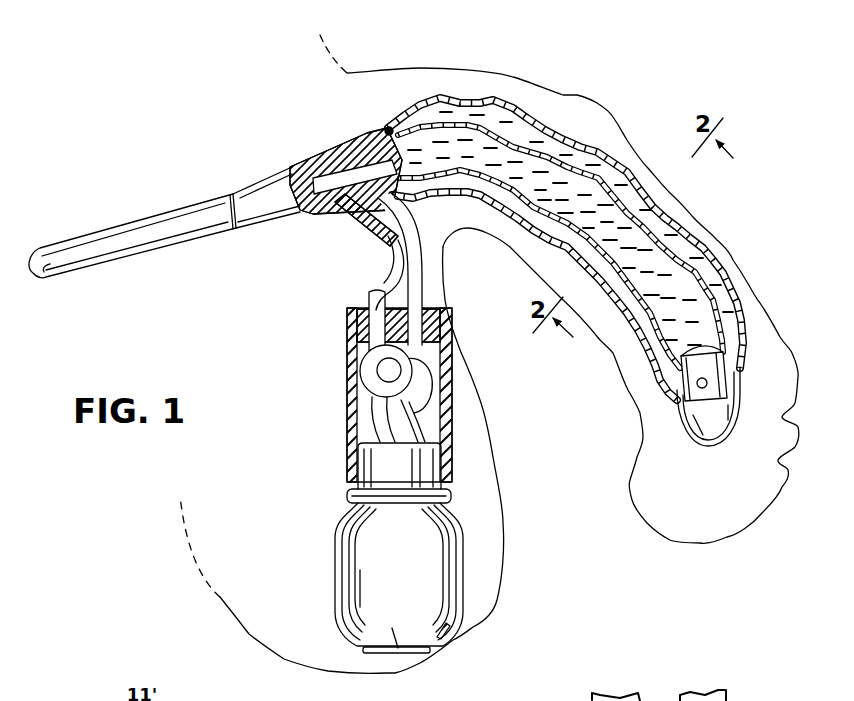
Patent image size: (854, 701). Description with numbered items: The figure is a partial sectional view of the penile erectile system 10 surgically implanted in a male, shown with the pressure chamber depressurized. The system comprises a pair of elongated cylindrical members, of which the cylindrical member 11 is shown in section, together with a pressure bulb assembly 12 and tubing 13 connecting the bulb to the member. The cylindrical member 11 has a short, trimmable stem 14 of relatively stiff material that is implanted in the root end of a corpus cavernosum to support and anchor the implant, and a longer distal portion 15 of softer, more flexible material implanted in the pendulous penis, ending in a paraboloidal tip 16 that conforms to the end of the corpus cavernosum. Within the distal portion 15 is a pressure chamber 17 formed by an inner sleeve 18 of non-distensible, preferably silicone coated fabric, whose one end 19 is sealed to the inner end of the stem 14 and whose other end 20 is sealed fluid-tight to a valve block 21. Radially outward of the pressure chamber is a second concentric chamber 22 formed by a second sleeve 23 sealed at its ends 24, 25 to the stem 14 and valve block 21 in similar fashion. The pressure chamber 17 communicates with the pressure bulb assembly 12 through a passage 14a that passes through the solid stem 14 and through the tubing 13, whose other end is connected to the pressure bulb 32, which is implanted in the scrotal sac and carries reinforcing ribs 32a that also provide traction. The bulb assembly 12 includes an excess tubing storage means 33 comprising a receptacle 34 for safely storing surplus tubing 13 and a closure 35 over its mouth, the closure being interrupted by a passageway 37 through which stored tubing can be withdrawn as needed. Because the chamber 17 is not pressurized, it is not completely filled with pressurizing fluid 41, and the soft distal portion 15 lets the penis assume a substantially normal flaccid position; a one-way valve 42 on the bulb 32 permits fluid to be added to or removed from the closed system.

The penile erectile system 10 is at (548, 122).
The elongated cylindrical member 11 is at (727, 253).
The pressure bulb assembly 12 is at (458, 518).
The tubing 13 is at (427, 272).
The stem 14 is at (180, 205).
The passage 14a is at (343, 143).
The distal portion 15 is at (652, 216).
The tip 16 is at (727, 482).
The pressure chamber 17 is at (705, 305).
The inner sleeve 18 is at (740, 285).
The end of inner sleeve 19 is at (389, 128).
The end of inner sleeve 20 is at (680, 358).
The valve block 21 is at (725, 373).
The second concentric chamber 22 is at (595, 142).
The second sleeve 23 is at (620, 158).
The end of second sleeve 24 is at (368, 135).
The end of second sleeve 25 is at (677, 402).
The pressure bulb 32 is at (468, 603).
The ribs 32a is at (333, 560).
The excess tubing storage means 33 is at (456, 422).
The receptacle 34 is at (452, 364).
The closure 35 is at (356, 319).
The passageway 37 is at (422, 308).
The pressurizing fluid 41 is at (653, 252).
The one-way valve 42 is at (420, 640).